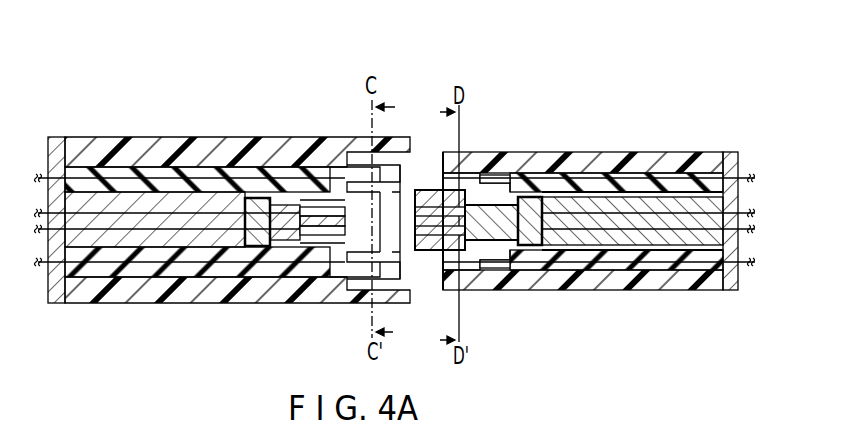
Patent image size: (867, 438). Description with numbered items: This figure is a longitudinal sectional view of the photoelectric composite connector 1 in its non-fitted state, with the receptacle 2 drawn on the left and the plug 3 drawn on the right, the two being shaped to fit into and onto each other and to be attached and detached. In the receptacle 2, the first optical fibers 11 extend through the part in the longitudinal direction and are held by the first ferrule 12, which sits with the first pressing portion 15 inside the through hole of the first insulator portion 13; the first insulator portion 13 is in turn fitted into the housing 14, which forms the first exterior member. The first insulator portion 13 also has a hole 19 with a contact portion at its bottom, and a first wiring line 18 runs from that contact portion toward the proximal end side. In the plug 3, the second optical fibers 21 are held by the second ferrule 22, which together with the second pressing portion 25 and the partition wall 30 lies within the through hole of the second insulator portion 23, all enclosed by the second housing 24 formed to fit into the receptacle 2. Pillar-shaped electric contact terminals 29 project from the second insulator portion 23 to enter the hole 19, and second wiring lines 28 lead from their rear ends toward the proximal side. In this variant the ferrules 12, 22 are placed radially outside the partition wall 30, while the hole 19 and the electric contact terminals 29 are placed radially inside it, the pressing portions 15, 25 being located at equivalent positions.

The photoelectric composite connector 1 is at (400, 76).
The receptacle 2 is at (261, 100).
The plug 3 is at (549, 100).
The first optical fibers 11 is at (70, 150).
The first ferrule 12 is at (225, 180).
The first insulator portion 13 is at (262, 250).
The housing 14 is at (160, 155).
The first pressing portion 15 is at (117, 195).
The first wiring line 18 is at (202, 190).
The hole 19 is at (322, 175).
The second optical fibers 21 is at (727, 170).
The second ferrule 22 is at (538, 182).
The second insulator portion 23 is at (528, 247).
The second housing 24 is at (578, 162).
The second pressing portion 25 is at (612, 203).
The second wiring lines 28 is at (660, 212).
The electric contact terminals 29 is at (440, 190).
The partition wall 30 is at (424, 196).